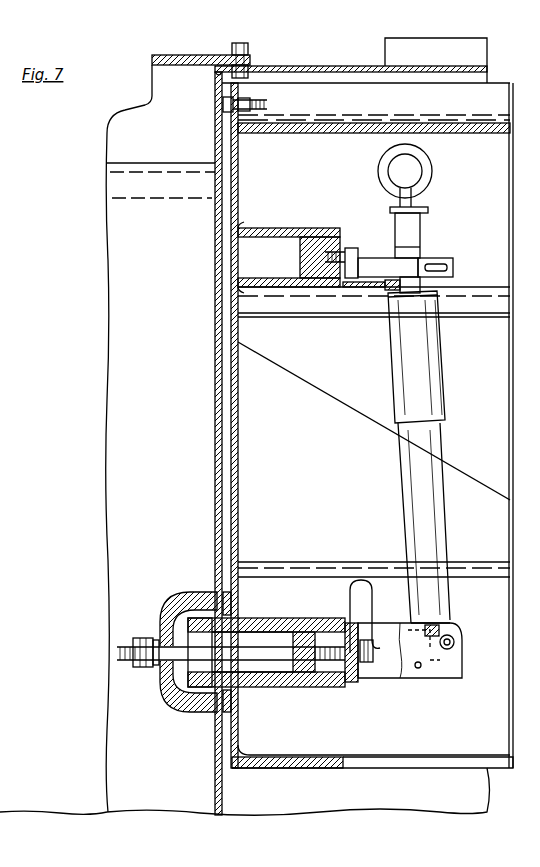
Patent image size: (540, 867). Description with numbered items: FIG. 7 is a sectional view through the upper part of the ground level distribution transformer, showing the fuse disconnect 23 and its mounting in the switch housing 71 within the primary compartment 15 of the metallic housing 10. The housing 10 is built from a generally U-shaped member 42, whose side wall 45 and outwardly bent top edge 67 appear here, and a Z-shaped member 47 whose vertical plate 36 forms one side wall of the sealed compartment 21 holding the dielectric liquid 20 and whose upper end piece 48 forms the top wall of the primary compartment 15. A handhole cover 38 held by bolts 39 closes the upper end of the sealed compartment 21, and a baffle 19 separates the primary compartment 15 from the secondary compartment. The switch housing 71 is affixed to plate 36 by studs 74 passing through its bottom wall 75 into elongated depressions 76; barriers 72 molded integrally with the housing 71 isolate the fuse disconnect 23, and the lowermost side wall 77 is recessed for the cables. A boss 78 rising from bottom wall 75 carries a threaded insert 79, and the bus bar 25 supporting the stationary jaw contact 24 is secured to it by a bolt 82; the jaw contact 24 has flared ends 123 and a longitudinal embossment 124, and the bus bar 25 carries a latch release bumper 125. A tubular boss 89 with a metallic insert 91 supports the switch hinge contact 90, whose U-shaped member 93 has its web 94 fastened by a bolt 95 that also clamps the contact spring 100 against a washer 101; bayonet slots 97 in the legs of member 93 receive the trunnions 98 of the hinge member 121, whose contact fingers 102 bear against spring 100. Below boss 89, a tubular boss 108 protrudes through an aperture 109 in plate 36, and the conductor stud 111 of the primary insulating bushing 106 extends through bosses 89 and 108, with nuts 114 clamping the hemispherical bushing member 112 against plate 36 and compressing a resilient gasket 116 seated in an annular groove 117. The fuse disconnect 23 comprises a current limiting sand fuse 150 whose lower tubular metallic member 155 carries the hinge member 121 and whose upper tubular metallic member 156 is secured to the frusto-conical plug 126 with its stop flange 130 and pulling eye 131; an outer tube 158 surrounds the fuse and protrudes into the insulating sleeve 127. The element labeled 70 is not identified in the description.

The metallic housing 10 is at (309, 45).
The primary compartment 15 is at (339, 790).
The baffle 19 is at (372, 810).
The dielectric liquid 20 is at (135, 163).
The sealed compartment 21 is at (73, 641).
The fuse disconnect 23 is at (379, 493).
The stationary jaw contact 24 is at (374, 256).
The bus bar 25 is at (348, 292).
The vertical metallic plate 36 is at (0, 126).
The handhole cover 38 is at (200, 57).
The bolts 39 is at (246, 46).
The U-shaped member 42 is at (105, 134).
The side wall 45 is at (163, 95).
The Z-shaped member 47 is at (212, 362).
The upper end piece 48 is at (345, 67).
The top edge 67 is at (192, 70).
The enclosure 70 is at (518, 365).
The switch housing 71 is at (485, 416).
The barriers 72 is at (470, 507).
The studs 74 is at (265, 105).
The bottom wall 75 is at (236, 415).
The elongated depressions 76 is at (374, 109).
The lowermost side wall 77 is at (300, 768).
The bosses 78 is at (270, 228).
The threaded metallic inserts 79 is at (322, 237).
The bolts 82 is at (350, 248).
The bosses 89 is at (280, 618).
The switch hinge contact 90 is at (462, 703).
The metallic threaded insert 91 is at (306, 675).
The U-shaped member 93 is at (390, 680).
The web 94 is at (352, 684).
The bolt 95 is at (367, 665).
The bayonet slots 97 is at (428, 625).
The trunnions 98 is at (455, 640).
The contact spring 100 is at (380, 580).
The washer 101 is at (333, 675).
The contact finger 102 is at (375, 640).
The primary insulating bushing 106 is at (170, 715).
The tubular boss 108 is at (203, 622).
The aperture 109 is at (212, 705).
The conductor stud 111 is at (258, 660).
The hemispherical bushing member 112 is at (165, 683).
The nuts 114 is at (143, 638).
The annular resilient gasket 116 is at (225, 600).
The annular groove 117 is at (238, 610).
The hinge member 121 is at (422, 666).
The outwardly flared ends 123 is at (455, 264).
The longitudinal embossment 124 is at (438, 262).
The latch release bumper 125 is at (388, 292).
The frusto-conical plug 126 is at (412, 232).
The sleeve 127 is at (416, 356).
The stop flange 130 is at (428, 209).
The pulling eye 131 is at (430, 165).
The current limiting sand fuse 150 is at (455, 545).
The lower tubular metallic member 155 is at (440, 622).
The upper tubular metallic member 156 is at (420, 285).
The outer tube 158 is at (418, 470).